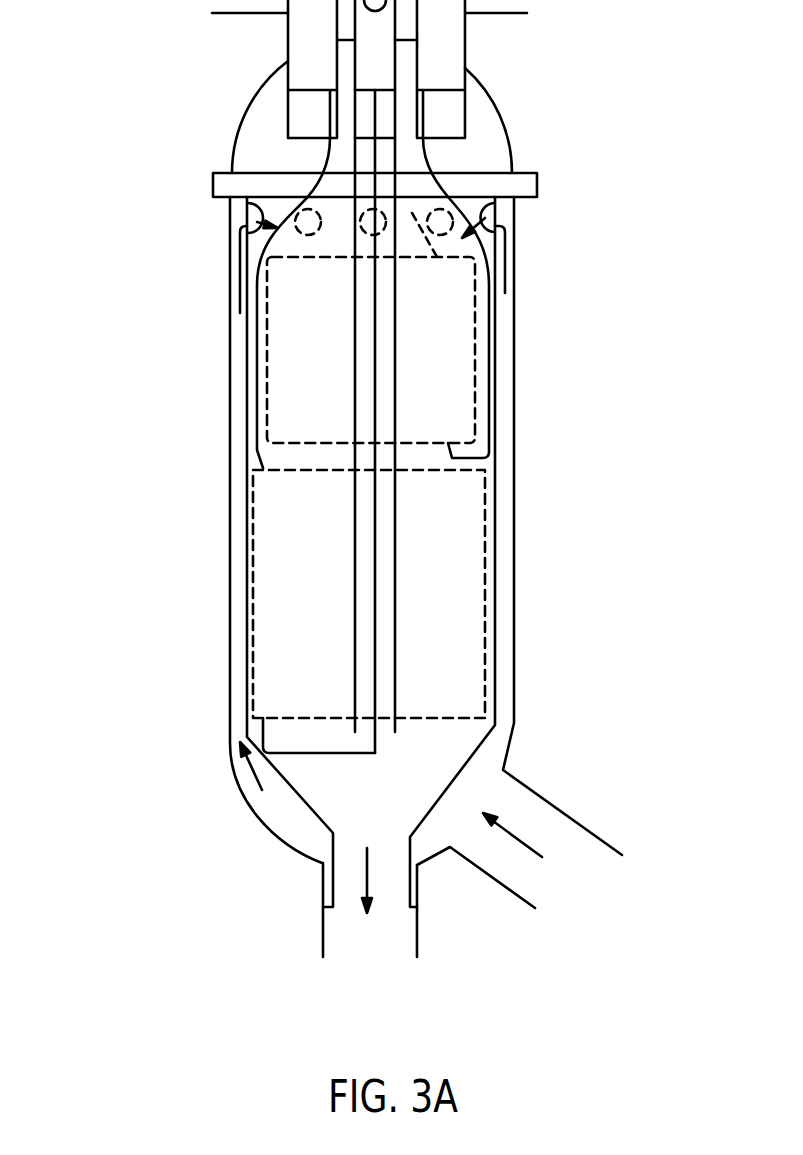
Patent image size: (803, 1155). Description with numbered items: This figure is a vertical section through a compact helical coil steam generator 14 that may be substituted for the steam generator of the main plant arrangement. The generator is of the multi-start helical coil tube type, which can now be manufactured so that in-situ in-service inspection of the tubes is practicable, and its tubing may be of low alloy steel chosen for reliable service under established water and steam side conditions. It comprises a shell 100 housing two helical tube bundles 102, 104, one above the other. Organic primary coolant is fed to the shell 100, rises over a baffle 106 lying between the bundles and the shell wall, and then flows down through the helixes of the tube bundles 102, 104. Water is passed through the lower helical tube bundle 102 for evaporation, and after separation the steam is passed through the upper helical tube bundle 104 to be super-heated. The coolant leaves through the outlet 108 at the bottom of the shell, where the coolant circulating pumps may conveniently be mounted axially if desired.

The steam generator 14 is at (485, 140).
The shell 100 is at (230, 462).
The lower helical tube bundle 102 is at (457, 583).
The upper helical tube bundle 104 is at (448, 353).
The baffle 106 is at (245, 607).
The outlet 108 is at (337, 937).